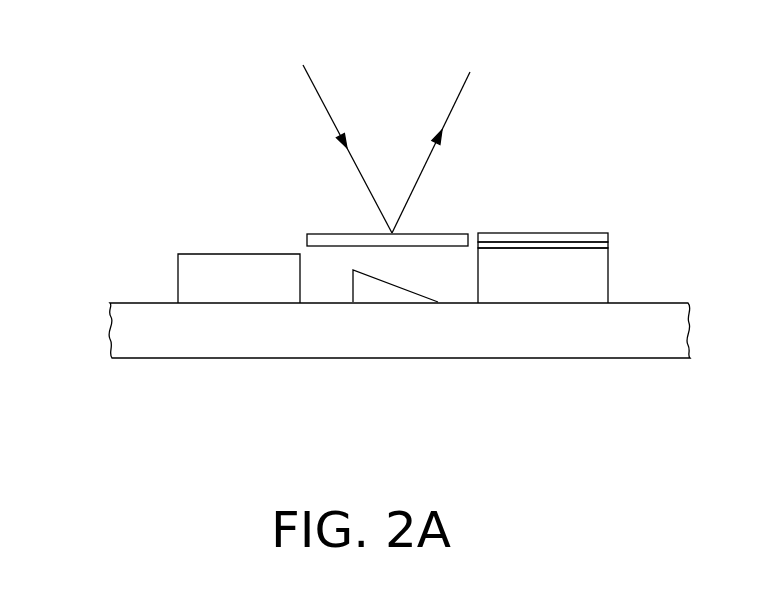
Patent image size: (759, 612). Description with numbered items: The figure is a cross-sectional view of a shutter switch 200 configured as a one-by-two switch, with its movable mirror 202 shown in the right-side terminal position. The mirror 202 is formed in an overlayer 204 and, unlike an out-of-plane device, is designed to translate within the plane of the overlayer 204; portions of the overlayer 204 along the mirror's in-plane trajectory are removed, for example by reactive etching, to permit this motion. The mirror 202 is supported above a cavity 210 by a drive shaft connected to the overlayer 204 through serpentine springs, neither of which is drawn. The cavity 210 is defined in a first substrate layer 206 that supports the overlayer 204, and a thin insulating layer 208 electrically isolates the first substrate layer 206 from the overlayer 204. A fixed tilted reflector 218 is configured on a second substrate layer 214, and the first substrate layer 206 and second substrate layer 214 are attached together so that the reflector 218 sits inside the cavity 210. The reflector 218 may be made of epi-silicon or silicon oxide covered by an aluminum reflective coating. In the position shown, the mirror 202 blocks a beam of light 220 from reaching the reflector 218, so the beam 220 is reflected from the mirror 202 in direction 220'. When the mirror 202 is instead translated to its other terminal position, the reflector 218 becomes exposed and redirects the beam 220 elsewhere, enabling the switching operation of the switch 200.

The shutter switch 200 is at (120, 441).
The movable mirror 202 is at (430, 233).
The overlayer 204 is at (580, 233).
The first substrate layer 206 is at (603, 280).
The insulating layer 208 is at (608, 245).
The cavity 210 is at (447, 278).
The second substrate layer 214 is at (570, 332).
The fixed tilted reflector 218 is at (366, 290).
The beam of light 220 is at (336, 133).
The direction 220' is at (446, 135).